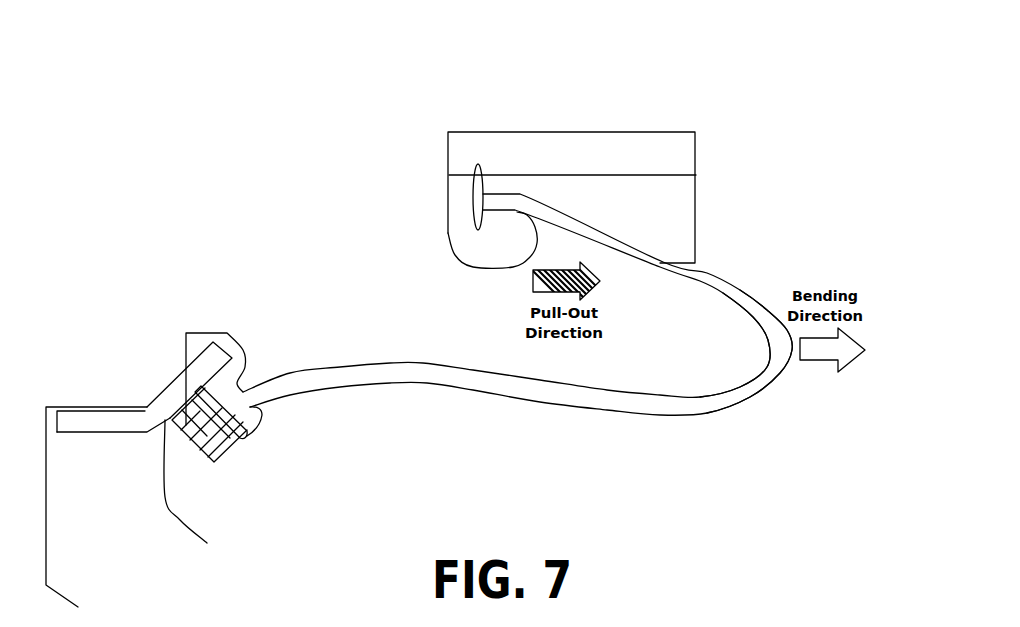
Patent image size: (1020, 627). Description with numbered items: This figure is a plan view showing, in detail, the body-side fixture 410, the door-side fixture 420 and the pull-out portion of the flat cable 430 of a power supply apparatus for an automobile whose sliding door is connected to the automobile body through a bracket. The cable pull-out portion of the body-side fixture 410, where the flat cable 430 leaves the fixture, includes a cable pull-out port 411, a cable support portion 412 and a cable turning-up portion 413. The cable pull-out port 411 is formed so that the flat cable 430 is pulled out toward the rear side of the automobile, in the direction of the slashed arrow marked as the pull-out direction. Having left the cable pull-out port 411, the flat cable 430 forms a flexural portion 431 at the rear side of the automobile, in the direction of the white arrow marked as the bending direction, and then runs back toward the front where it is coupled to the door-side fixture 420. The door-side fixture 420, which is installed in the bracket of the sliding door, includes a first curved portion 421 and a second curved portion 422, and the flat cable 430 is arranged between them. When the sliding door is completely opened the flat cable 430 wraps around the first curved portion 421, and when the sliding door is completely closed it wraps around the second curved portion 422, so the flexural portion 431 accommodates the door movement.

The body-side fixture 410 is at (531, 146).
The cable pull-out port 411 is at (468, 197).
The cable support portion 412 is at (660, 210).
The cable turning-up portion 413 is at (487, 255).
The door-side fixture 420 is at (192, 410).
The first curved portion 421 is at (186, 347).
The second curved portion 422 is at (260, 428).
The flat cable 430 is at (541, 364).
The flexural portion 431 is at (777, 368).